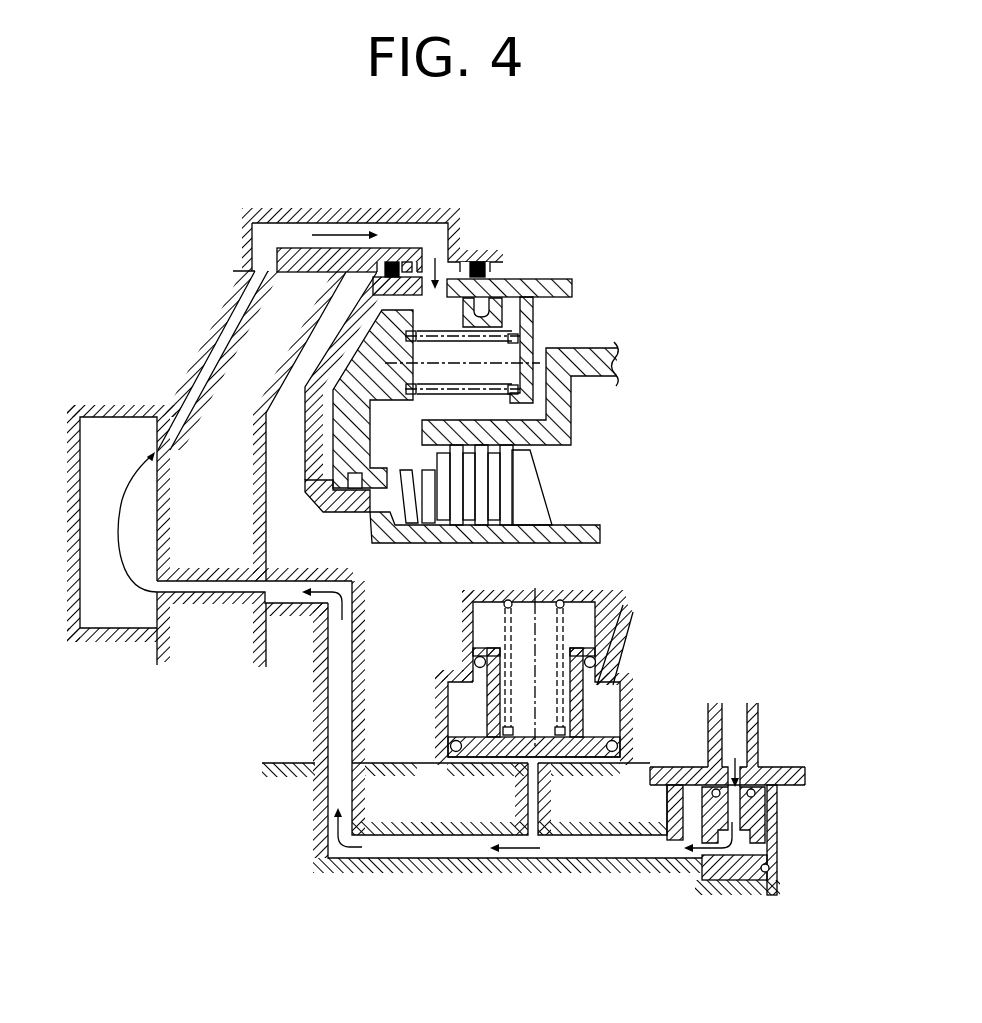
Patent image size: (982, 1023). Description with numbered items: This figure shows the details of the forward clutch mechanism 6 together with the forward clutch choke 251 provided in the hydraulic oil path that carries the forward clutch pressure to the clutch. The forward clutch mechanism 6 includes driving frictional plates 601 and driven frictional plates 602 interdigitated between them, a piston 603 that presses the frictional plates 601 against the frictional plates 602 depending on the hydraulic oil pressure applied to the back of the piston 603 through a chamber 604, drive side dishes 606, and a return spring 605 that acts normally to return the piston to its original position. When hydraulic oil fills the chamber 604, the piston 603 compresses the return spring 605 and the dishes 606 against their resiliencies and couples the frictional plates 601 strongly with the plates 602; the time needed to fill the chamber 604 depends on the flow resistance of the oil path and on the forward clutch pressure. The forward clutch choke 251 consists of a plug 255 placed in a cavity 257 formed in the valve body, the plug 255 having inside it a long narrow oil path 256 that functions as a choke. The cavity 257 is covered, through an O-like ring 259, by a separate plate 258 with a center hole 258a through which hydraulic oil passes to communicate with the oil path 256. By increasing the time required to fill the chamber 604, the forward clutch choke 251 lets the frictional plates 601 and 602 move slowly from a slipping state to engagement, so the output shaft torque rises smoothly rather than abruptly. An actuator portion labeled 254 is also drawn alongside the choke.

The forward clutch mechanism 6 is at (596, 495).
The driving frictional plates 601 is at (443, 518).
The driven frictional plates 602 is at (512, 452).
The piston 603 is at (356, 452).
The chamber 604 is at (327, 452).
The return spring 605 is at (500, 380).
The drive side dishes 606 is at (408, 504).
The forward clutch choke 251 is at (725, 895).
The actuator 254 is at (622, 578).
The plug 255 is at (758, 810).
The oil path 256 is at (726, 812).
The cavity 257 is at (769, 872).
The plate 258 is at (800, 767).
The center hole 258a is at (733, 758).
The O-like ring 259 is at (750, 787).